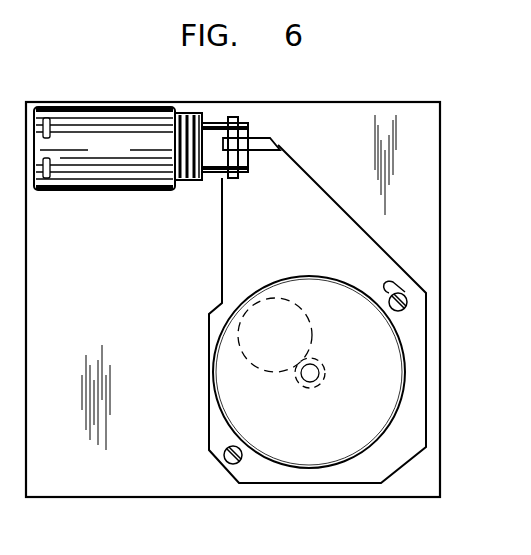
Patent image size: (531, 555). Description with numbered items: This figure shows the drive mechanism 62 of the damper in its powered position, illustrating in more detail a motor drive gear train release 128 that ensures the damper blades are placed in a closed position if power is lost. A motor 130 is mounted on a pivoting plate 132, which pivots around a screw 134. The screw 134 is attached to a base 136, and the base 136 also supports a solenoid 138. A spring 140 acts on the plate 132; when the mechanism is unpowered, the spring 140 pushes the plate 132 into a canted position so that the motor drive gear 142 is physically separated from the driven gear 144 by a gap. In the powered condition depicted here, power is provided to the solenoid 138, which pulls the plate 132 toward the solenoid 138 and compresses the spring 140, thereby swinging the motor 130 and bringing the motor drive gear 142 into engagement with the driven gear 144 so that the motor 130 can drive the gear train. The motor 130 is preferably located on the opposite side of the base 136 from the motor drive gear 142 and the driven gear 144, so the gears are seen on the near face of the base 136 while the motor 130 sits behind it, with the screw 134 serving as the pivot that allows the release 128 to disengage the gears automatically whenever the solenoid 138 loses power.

The drive mechanism 62 is at (420, 87).
The motor drive gear train release 128 is at (128, 294).
The motor 130 is at (407, 345).
The pivoting plate 132 is at (304, 244).
The screw 134 is at (227, 463).
The base 136 is at (415, 141).
The solenoid 138 is at (104, 148).
The spring 140 is at (200, 114).
The motor drive gear 142 is at (296, 386).
The driven gear 144 is at (238, 343).